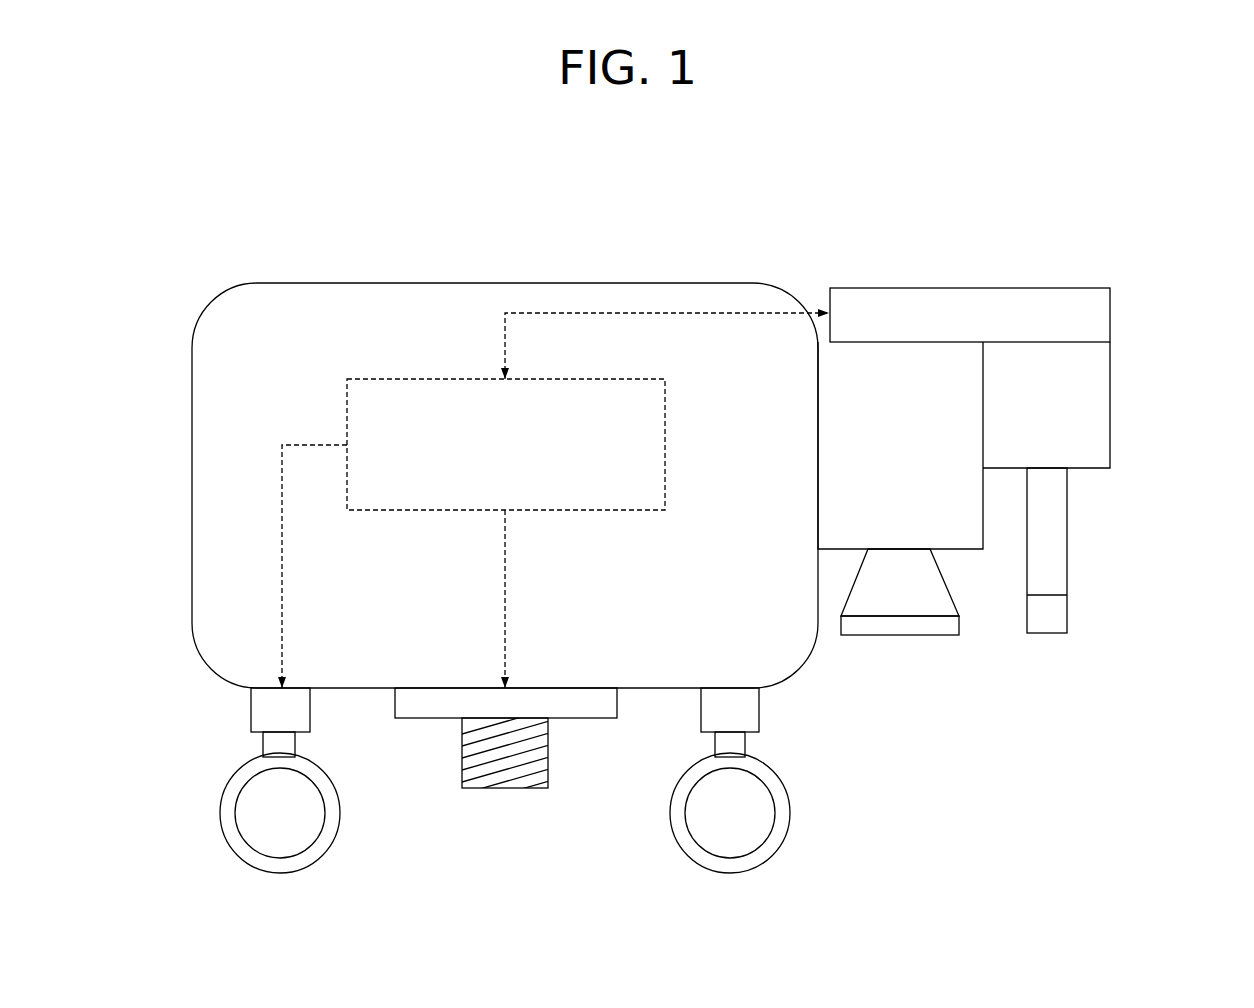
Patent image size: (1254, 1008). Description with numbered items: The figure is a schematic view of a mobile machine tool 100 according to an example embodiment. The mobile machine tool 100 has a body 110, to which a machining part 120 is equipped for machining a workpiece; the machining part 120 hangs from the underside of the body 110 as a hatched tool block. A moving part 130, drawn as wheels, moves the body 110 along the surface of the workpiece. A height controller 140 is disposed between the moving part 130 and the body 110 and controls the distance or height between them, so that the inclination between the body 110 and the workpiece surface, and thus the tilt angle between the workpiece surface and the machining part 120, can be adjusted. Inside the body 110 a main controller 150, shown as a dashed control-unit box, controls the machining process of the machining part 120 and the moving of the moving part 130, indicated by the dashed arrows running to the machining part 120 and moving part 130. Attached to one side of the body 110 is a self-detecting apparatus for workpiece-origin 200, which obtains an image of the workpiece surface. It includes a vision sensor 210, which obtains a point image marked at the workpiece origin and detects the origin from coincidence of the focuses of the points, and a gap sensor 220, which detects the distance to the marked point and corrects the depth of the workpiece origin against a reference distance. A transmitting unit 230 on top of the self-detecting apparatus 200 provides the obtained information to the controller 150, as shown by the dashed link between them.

The mobile machine tool 100 is at (936, 179).
The body 110 is at (606, 283).
The machining part 120 is at (502, 790).
The moving part 130 is at (221, 810).
The height controller 140 is at (251, 706).
The main controller 150 is at (395, 379).
The self-detecting apparatus for workpiece-origin 200 is at (1007, 450).
The vision sensor 210 is at (898, 637).
The gap sensor 220 is at (1045, 635).
The transmitting unit 230 is at (1111, 313).